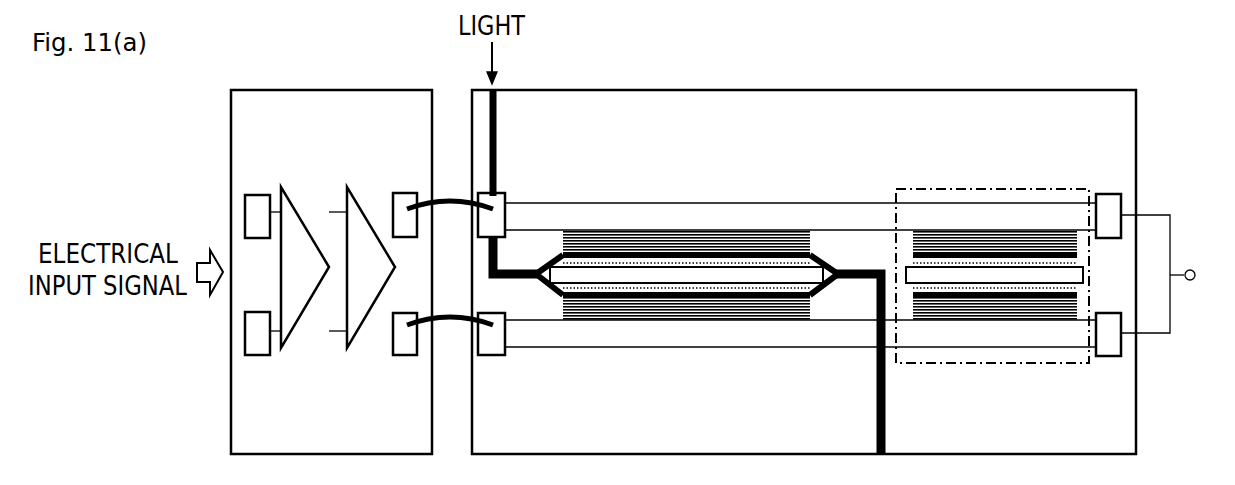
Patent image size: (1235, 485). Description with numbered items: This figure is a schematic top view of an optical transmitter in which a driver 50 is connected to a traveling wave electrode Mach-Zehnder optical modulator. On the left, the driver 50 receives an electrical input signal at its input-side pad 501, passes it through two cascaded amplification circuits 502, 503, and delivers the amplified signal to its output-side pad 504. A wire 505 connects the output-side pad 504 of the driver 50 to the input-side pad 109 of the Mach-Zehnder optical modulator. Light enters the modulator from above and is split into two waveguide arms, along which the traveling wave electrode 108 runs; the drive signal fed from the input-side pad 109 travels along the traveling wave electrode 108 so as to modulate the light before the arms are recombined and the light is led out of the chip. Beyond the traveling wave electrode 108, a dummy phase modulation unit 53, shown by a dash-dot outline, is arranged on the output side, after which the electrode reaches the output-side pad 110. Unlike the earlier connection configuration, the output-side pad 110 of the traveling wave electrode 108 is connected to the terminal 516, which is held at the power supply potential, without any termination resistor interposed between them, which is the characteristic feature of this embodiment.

The driver 50 is at (331, 90).
The input-side pad 501 is at (250, 320).
The amplification circuit 502 is at (304, 196).
The amplification circuit 503 is at (370, 196).
The output-side pad 504 is at (403, 325).
The wire 505 is at (448, 313).
The input-side pad 109 is at (502, 317).
The traveling wave electrode 108 is at (693, 333).
The dummy phase modulation unit 53 is at (938, 188).
The output-side pad 110 is at (1117, 320).
The terminal 516 is at (1191, 281).